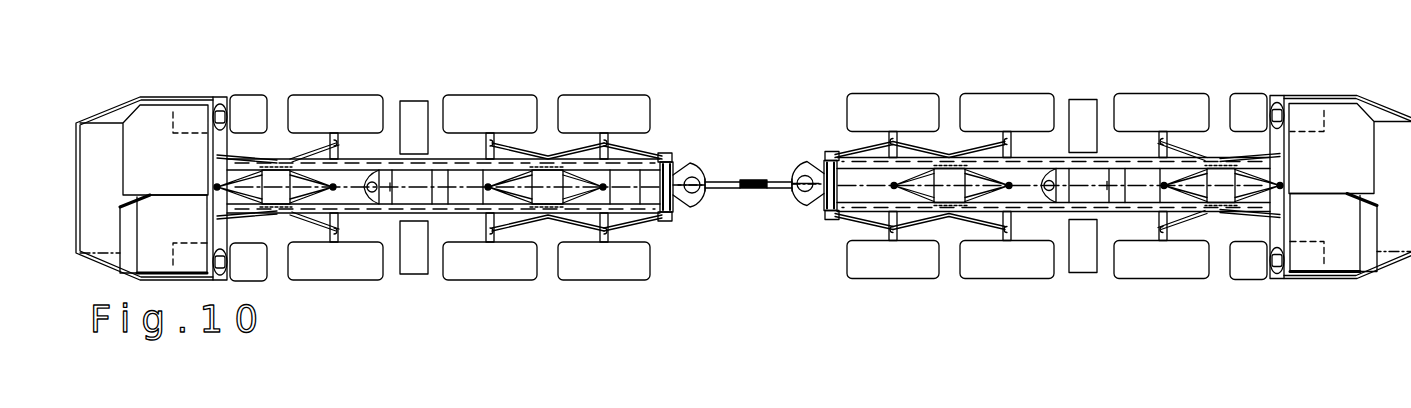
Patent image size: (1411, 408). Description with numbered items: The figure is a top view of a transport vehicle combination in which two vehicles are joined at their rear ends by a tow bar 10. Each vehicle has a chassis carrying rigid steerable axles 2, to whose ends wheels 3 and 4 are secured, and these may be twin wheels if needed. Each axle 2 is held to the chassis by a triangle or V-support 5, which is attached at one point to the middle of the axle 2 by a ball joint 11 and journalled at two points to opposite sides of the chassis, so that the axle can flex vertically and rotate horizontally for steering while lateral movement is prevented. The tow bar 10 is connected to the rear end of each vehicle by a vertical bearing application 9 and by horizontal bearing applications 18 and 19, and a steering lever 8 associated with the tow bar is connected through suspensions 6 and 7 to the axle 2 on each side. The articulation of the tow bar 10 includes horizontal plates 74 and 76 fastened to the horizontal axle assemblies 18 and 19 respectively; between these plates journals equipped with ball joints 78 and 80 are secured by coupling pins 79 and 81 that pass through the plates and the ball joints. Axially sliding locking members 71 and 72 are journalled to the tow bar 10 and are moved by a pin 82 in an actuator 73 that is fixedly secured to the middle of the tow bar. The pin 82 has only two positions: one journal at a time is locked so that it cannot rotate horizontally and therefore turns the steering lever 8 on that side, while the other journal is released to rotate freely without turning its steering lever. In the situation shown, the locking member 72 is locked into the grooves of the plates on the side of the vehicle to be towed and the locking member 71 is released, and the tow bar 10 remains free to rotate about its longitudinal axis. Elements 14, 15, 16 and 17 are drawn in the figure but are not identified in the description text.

The axle 2 is at (611, 130).
The wheel 3 is at (588, 112).
The wheel 4 is at (595, 270).
The V-support 5 is at (582, 203).
The suspension 6 is at (624, 152).
The suspension 7 is at (627, 228).
The steering lever 8 is at (667, 218).
The vertical bearing application 9 is at (660, 186).
The tow bar 10 is at (782, 207).
The ball joint 11 is at (620, 177).
The axle journal 14 is at (600, 141).
The bearing bracket 15 is at (663, 160).
The axle journal 16 is at (598, 232).
The end cross member 17 is at (830, 158).
The horizontal bearing application 18 is at (700, 163).
The horizontal bearing application 19 is at (827, 163).
The locking member 71 is at (726, 180).
The locking member 72 is at (773, 180).
The actuator 73 is at (753, 194).
The horizontal plate 74 is at (707, 160).
The horizontal plate 76 is at (805, 168).
The ball joint journal 78 is at (682, 206).
The coupling pin 79 is at (706, 163).
The ball joint journal 80 is at (806, 163).
The coupling pin 81 is at (825, 207).
The pin 82 is at (760, 180).